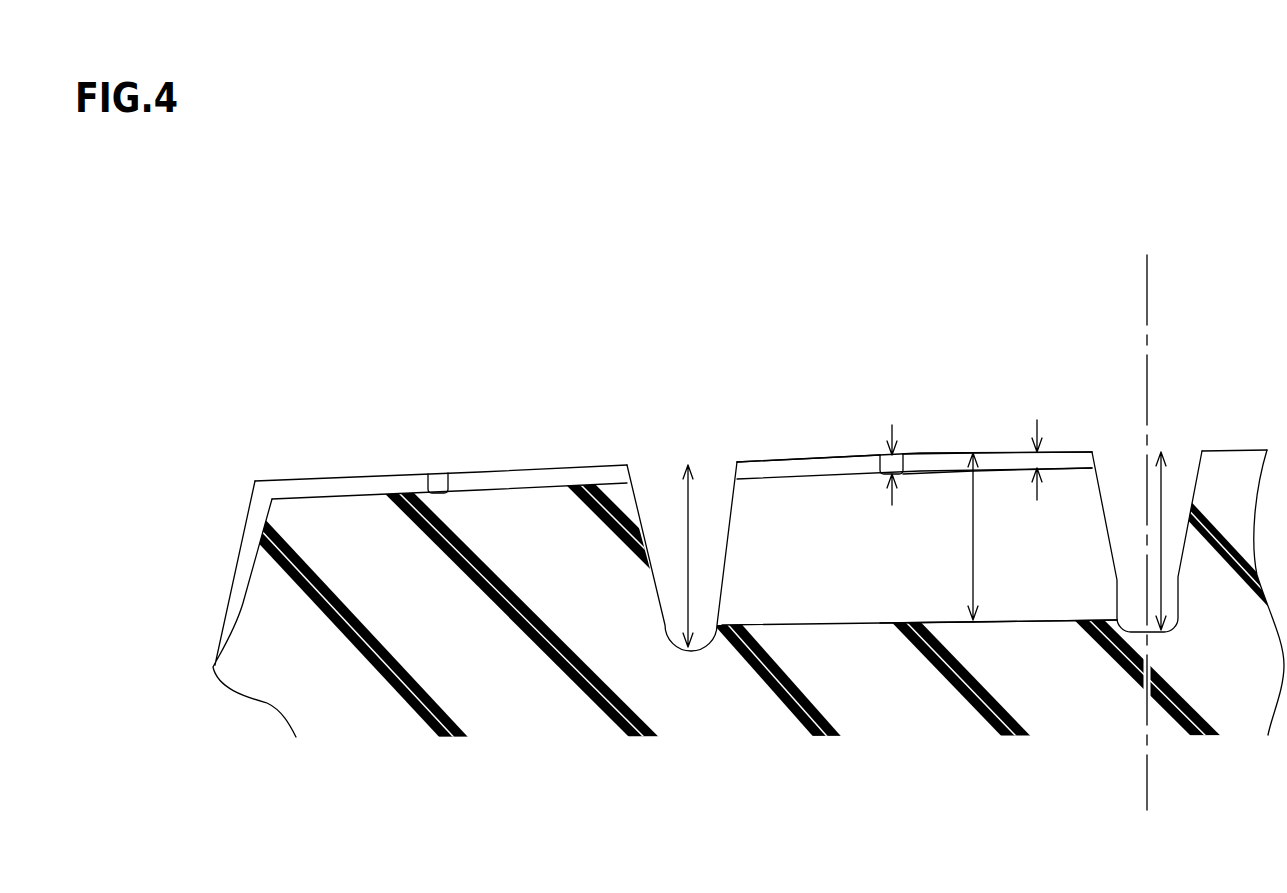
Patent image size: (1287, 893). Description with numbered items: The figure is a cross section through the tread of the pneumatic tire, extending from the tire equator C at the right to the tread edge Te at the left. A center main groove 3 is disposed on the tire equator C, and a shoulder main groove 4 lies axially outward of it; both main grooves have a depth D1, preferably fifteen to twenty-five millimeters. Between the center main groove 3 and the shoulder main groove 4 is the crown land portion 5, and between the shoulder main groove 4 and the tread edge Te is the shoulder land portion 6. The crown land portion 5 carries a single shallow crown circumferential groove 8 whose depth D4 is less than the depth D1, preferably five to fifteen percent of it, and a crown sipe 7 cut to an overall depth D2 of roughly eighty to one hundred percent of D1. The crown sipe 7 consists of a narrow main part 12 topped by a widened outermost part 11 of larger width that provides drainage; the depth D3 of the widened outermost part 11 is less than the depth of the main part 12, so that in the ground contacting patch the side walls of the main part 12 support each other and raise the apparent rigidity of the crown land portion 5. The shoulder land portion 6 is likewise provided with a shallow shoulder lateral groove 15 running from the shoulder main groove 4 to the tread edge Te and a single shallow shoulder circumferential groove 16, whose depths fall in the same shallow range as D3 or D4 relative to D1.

The tread edge Te is at (250, 479).
The shoulder land portion 6 is at (345, 460).
The shoulder lateral groove 15 is at (532, 460).
The shoulder circumferential groove 16 is at (443, 466).
The shoulder main groove 4 is at (668, 491).
The crown land portion 5 is at (791, 444).
The shallow crown circumferential groove 8 is at (882, 458).
The crown sipe 7 is at (1055, 290).
The main part 12 is at (923, 507).
The widened outermost part 11 is at (1005, 463).
The center main groove 3 is at (1135, 476).
The tire equator C is at (1146, 515).
The depth of the main grooves D1 is at (690, 592).
The overall depth of the crown sipe D2 is at (973, 565).
The depth of the widened outermost part D3 is at (1040, 464).
The depth of the shallow crown circumferential groove D4 is at (892, 478).